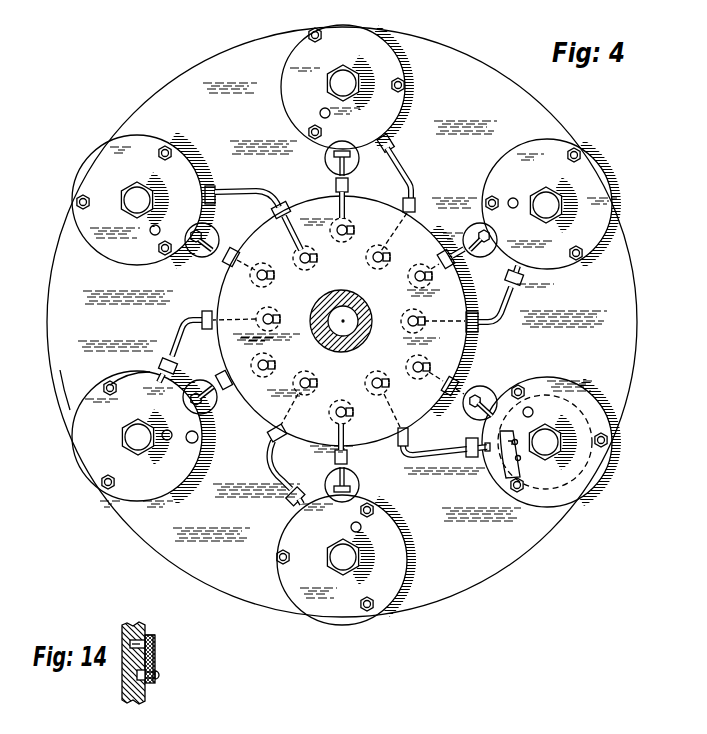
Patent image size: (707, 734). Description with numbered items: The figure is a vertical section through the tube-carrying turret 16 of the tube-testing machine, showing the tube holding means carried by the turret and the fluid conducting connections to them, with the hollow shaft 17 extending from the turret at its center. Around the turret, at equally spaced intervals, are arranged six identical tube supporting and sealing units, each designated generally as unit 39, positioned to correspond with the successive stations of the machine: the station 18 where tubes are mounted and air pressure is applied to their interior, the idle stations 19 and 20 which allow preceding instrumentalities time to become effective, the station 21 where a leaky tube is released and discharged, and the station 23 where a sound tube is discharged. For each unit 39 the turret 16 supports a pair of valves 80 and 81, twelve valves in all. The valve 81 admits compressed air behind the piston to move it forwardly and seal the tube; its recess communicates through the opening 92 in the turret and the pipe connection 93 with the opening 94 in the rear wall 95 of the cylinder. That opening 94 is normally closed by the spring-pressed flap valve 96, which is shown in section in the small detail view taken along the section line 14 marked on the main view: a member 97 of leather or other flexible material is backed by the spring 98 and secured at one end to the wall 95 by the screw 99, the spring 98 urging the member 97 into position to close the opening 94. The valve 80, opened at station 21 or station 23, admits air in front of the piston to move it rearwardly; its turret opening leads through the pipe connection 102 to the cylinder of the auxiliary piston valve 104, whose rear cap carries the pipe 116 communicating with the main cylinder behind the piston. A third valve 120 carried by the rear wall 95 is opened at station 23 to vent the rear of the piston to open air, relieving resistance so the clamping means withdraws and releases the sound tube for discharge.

In FIG. 4, the section line 14 is at (500, 431).
In FIG. 4, the turret 16 is at (538, 108).
In FIG. 4, the hollow shaft 17 is at (339, 292).
In FIG. 4, the station 18 is at (537, 442).
In FIG. 4, the station 19 is at (537, 212).
In FIG. 4, the station 20 is at (343, 108).
In FIG. 4, the station 21 is at (145, 200).
In FIG. 4, the station 23 is at (137, 424).
In FIG. 4, the tube supporting and sealing unit 39 is at (86, 388).
In FIG. 4, the valve 80 is at (349, 399).
In FIG. 4, the valve 81 is at (315, 364).
In FIG. 4, the opening 92 is at (284, 404).
In FIG. 4, the pipe connection 93 is at (276, 471).
In FIG. 14, the opening 94 is at (130, 642).
In FIG. 4, the rear wall 95 is at (128, 377).
In FIG. 14, the rear wall 95 is at (123, 685).
In FIG. 14, the flap valve 96 is at (154, 638).
In FIG. 14, the member 97 is at (148, 634).
In FIG. 14, the spring 98 is at (155, 658).
In FIG. 14, the screw 99 is at (159, 678).
In FIG. 4, the pipe connection 102 is at (232, 372).
In FIG. 4, the piston valve 104 is at (198, 378).
In FIG. 4, the pipe 116 is at (222, 405).
In FIG. 4, the third valve 120 is at (168, 427).